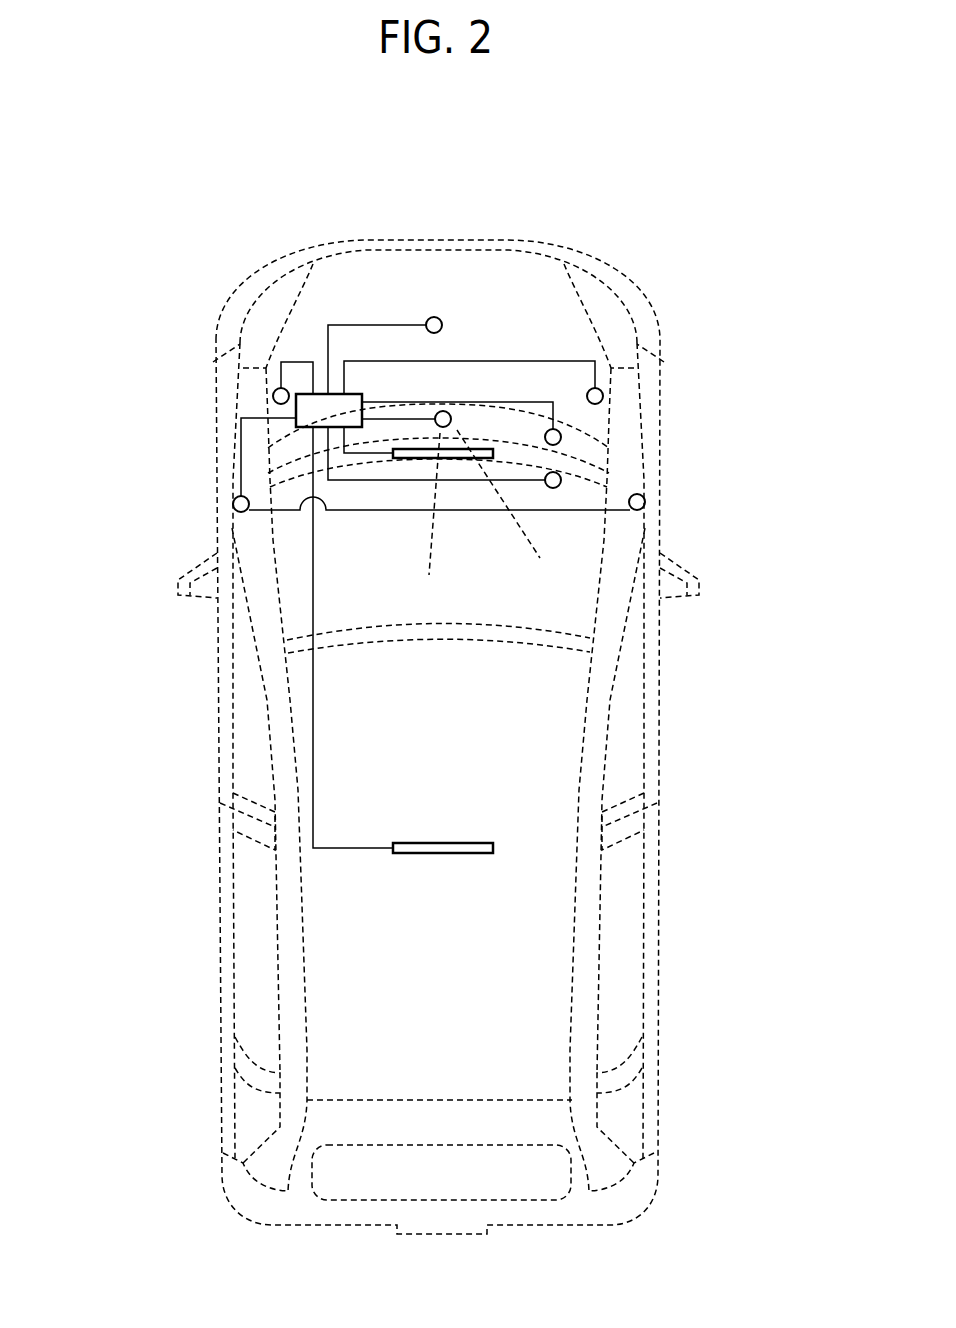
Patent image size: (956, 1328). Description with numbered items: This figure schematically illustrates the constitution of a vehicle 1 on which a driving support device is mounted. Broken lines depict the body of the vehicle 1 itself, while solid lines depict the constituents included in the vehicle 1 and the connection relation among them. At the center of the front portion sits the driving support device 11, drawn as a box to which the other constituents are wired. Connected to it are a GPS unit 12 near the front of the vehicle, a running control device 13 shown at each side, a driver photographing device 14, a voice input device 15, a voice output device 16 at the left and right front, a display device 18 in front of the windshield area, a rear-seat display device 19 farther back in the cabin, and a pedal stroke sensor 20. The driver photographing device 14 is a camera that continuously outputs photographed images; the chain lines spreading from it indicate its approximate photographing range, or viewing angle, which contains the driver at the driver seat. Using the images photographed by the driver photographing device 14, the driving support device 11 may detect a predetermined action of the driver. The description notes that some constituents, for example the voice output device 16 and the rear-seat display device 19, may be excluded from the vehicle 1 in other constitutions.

The vehicle 1 is at (718, 240).
The driving support device 11 is at (297, 414).
The GPS unit 12 is at (437, 316).
The running control device 13 is at (242, 513).
The driver photographing device 14 is at (449, 412).
The voice input device 15 is at (561, 438).
The voice output device 16 is at (279, 388).
The display device 18 is at (413, 459).
The rear-seat display device 19 is at (420, 855).
The pedal stroke sensor 20 is at (561, 478).